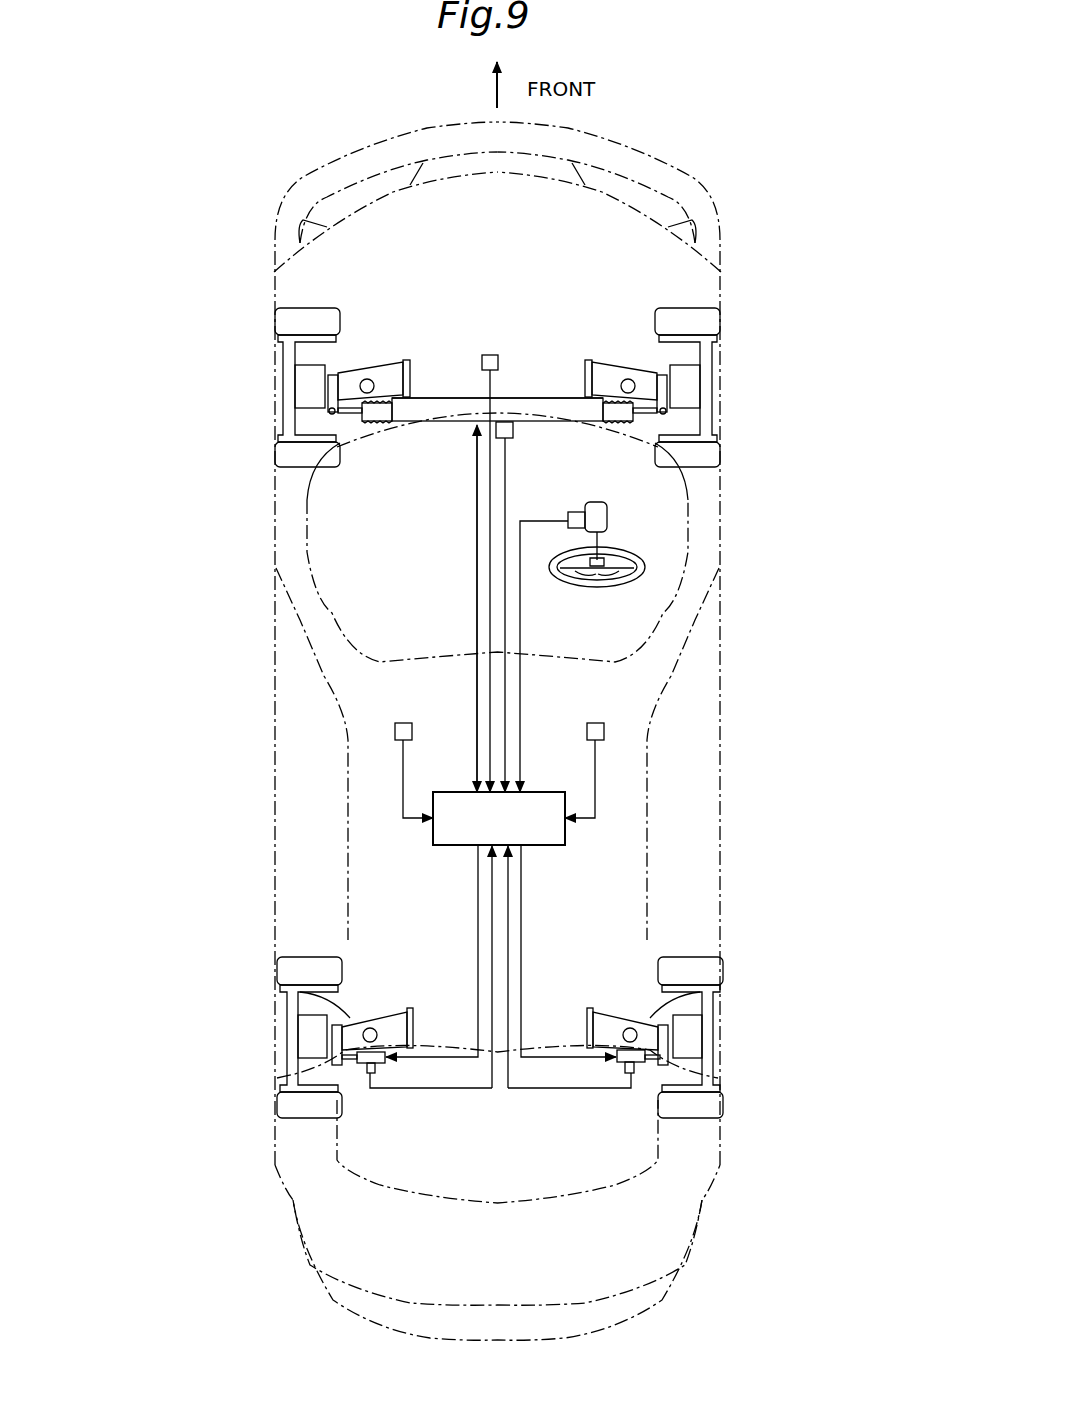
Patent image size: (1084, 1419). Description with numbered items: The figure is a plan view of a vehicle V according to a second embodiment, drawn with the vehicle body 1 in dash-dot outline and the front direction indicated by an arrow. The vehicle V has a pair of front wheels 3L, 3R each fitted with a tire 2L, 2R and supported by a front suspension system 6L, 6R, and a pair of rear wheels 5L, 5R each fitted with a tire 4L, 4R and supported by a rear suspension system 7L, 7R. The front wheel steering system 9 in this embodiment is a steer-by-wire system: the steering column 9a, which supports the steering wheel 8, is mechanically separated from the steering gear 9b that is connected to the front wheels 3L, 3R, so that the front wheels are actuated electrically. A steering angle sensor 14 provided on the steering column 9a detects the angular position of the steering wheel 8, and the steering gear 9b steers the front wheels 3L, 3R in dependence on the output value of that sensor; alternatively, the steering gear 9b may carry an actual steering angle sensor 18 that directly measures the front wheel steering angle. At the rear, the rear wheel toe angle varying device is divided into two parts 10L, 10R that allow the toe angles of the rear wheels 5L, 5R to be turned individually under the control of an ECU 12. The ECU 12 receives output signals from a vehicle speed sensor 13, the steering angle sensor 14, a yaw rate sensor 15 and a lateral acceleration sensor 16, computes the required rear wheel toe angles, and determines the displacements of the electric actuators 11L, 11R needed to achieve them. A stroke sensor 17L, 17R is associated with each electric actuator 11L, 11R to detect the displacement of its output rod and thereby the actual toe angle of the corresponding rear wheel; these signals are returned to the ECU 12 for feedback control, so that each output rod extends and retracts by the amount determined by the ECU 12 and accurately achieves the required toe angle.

The vehicle body 1 is at (720, 242).
The vehicle V is at (733, 120).
The tire 2L is at (283, 455).
The tire 2R is at (712, 452).
The front wheel 3L is at (280, 350).
The front wheel 3R is at (715, 345).
The tire 4L is at (283, 1105).
The tire 4R is at (715, 1105).
The rear wheel 5L is at (290, 1030).
The rear wheel 5R is at (710, 1028).
The front suspension system 6L is at (345, 368).
The front suspension system 6R is at (650, 365).
The rear suspension system 7L is at (345, 1010).
The rear suspension system 7R is at (652, 1010).
The steering wheel 8 is at (608, 586).
The front wheel steering system 9 is at (518, 357).
The steering column 9a is at (600, 503).
The steering gear 9b is at (512, 401).
The rear wheel toe angle varying device 10L is at (324, 928).
The rear wheel toe angle varying device 10R is at (671, 928).
The electric actuator 11L is at (357, 1060).
The electric actuator 11R is at (645, 1058).
The ECU 12 is at (545, 797).
The vehicle speed sensor 13 is at (489, 355).
The steering angle sensor 14 is at (576, 512).
The yaw rate sensor 15 is at (404, 723).
The lateral acceleration sensor 16 is at (595, 723).
The stroke sensor 17L is at (365, 1074).
The stroke sensor 17R is at (632, 1074).
The actual steering angle sensor 18 is at (513, 431).